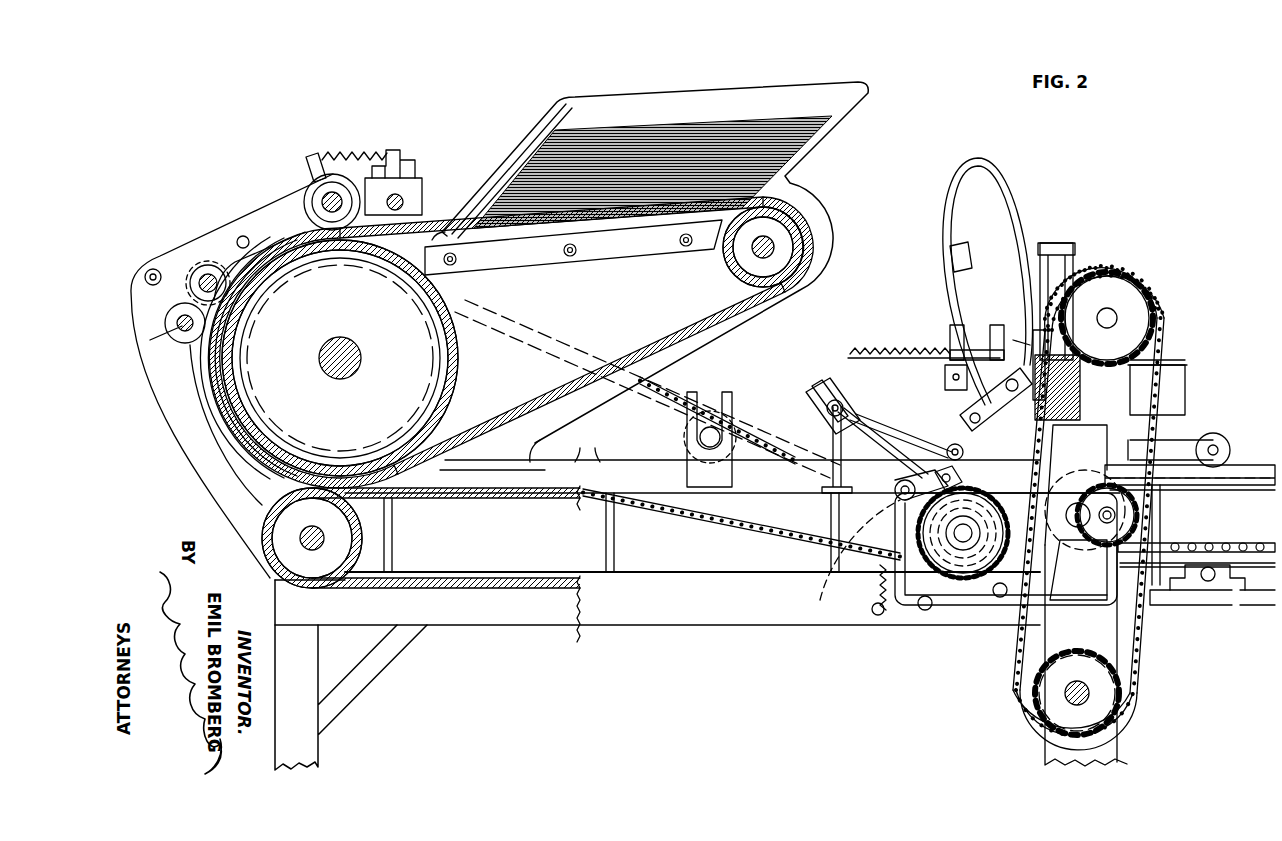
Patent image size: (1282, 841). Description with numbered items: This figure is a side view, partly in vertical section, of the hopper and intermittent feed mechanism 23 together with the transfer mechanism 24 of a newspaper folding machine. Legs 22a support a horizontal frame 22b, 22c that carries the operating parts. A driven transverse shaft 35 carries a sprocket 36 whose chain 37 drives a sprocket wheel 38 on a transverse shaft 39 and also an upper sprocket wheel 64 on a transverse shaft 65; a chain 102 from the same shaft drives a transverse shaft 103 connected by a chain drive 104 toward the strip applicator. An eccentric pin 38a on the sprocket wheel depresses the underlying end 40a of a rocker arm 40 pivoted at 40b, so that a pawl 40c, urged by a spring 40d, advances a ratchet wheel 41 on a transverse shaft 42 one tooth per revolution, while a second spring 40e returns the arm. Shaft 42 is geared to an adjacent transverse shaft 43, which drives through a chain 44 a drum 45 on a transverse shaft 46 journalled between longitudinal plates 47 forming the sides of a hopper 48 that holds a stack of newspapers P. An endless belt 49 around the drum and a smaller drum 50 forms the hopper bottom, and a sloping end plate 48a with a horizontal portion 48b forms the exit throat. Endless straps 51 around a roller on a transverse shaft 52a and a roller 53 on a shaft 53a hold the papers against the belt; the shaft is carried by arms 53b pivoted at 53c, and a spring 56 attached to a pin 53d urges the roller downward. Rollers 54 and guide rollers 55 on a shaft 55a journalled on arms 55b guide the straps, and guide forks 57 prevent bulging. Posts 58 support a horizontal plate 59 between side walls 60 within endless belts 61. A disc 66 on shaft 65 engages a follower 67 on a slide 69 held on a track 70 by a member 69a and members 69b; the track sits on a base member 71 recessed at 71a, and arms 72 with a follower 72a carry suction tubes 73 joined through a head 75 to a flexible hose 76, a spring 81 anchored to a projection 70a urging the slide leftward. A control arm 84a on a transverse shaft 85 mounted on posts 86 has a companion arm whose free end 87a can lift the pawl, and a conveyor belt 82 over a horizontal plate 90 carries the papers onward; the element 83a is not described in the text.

The legs 22a is at (322, 745).
The horizontal frame 22b is at (535, 600).
The horizontal frame 22c is at (1235, 612).
The hopper and intermittent feed mechanism 23 is at (536, 126).
The transfer mechanism 24 is at (1062, 218).
The transverse shaft 35 is at (1070, 700).
The sprocket 36 is at (1040, 722).
The chain 37 is at (1165, 336).
The sprocket wheel 38 is at (1090, 490).
The eccentric pin 38a is at (1117, 516).
The transverse shaft 39 is at (1085, 499).
The rocker arm 40 is at (1002, 579).
The underlying end of rocker arm 40a is at (1073, 594).
The pivot 40b is at (838, 522).
The pawl 40c is at (898, 484).
The spring 40d is at (905, 458).
The second spring 40e is at (880, 612).
The ratchet wheel 41 is at (950, 562).
The transverse shaft 42 is at (958, 540).
The transverse shaft 43 is at (851, 555).
The chain 44 is at (668, 520).
The drum 45 is at (366, 358).
The transverse shaft 46 is at (362, 358).
The longitudinal plates 47 is at (585, 398).
The hopper 48 is at (650, 239).
The end plate 48a is at (505, 166).
The horizontal portion 48b is at (447, 225).
The endless belt 49 is at (623, 225).
The smaller drum 50 is at (785, 225).
The endless straps 51 is at (286, 248).
The transverse shaft 52a is at (305, 540).
The roller 53 is at (320, 196).
The transverse shaft 53a is at (330, 200).
The longitudinal arms 53b is at (250, 222).
The pivot 53c is at (240, 236).
The pin 53d is at (319, 152).
The roller 54 is at (200, 272).
The guide rollers 55 is at (172, 326).
The transverse shaft 55a is at (180, 336).
The arms 55b is at (152, 288).
The spring 56 is at (356, 152).
The guide forks 57 is at (226, 250).
The posts 58 is at (394, 548).
The horizontal plate 59 is at (486, 497).
The side walls 60 is at (520, 449).
The endless belts 61 is at (272, 514).
The upper sprocket wheel 64 is at (1126, 302).
The transverse shaft 65 is at (1115, 314).
The disc 66 is at (1166, 318).
The follower 67 is at (1073, 262).
The slide 69 is at (1020, 345).
The member 69a is at (943, 372).
The members 69b is at (1040, 405).
The track 70 is at (1040, 262).
The projection 70a is at (925, 350).
The stationary base member 71 is at (1185, 385).
The space 71a is at (1075, 388).
The arms 72 is at (1030, 350).
The roller or follower 72a is at (962, 400).
The suction tubes 73 is at (953, 292).
The head 75 is at (950, 262).
The flexible hose 76 is at (980, 160).
The spring 81 is at (888, 350).
The conveyor belt 82 is at (1250, 466).
The roller 83a is at (1222, 432).
The arm 84a is at (858, 410).
The transverse shaft 85 is at (804, 414).
The posts 86 is at (832, 438).
The free end of arm 87a is at (962, 482).
The horizontal plate 90 is at (1236, 480).
The chain 102 is at (1142, 690).
The transverse shaft 103 is at (1078, 508).
The chain drive 104 is at (1250, 546).
The newspapers P is at (683, 130).